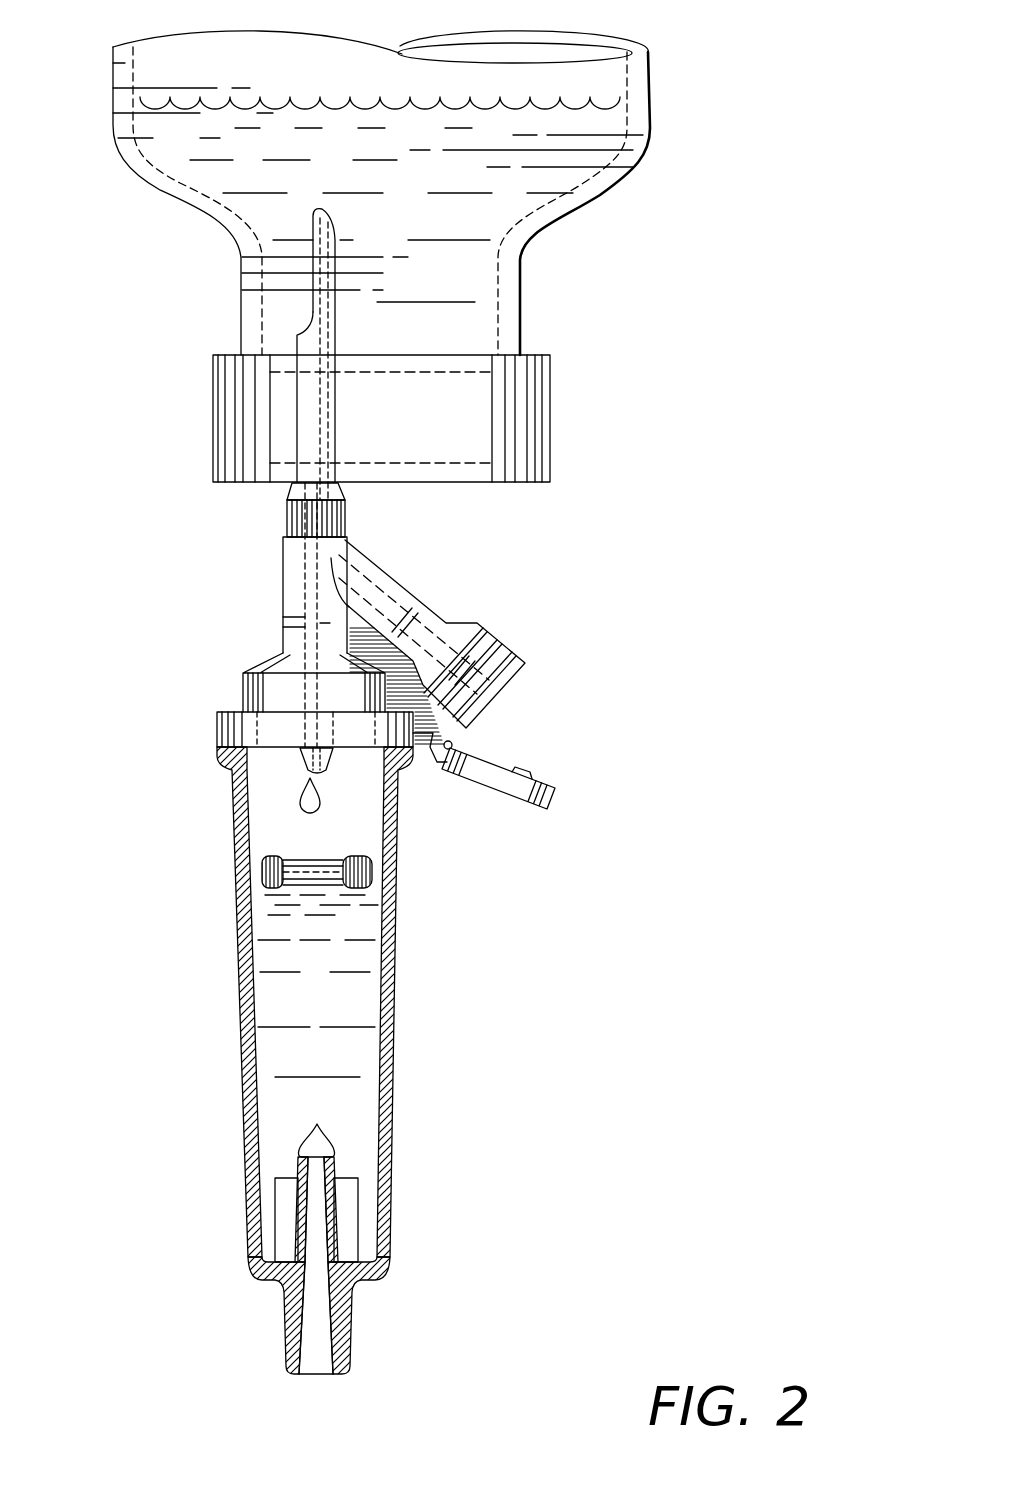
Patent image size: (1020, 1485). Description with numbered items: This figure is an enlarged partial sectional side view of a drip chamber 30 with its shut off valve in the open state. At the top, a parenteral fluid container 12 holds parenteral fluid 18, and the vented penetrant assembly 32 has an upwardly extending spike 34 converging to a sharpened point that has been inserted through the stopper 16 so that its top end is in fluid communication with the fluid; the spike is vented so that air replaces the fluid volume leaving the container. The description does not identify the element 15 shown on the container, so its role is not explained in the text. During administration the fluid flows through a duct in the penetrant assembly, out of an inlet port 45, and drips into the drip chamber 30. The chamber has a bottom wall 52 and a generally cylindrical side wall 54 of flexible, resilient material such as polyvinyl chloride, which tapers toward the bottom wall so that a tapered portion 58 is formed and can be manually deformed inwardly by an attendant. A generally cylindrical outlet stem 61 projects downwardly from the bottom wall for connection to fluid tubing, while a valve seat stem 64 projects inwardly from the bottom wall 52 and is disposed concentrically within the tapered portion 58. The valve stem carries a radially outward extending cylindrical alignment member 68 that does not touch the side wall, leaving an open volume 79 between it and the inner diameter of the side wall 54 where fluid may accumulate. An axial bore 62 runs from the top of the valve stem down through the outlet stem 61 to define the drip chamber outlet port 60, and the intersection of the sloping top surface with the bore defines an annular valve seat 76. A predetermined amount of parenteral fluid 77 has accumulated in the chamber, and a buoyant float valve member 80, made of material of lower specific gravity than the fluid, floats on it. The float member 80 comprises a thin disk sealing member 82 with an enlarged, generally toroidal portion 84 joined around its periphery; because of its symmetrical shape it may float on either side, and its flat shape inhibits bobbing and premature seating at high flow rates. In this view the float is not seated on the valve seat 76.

The parenteral fluid container 12 is at (182, 271).
The reservoir bag 15 is at (607, 193).
The stopper 16 is at (480, 433).
The parenteral fluid 18 is at (603, 110).
The drip chamber 30 is at (403, 810).
The vented penetrant assembly 32 is at (283, 582).
The spike 34 is at (336, 234).
The inlet port 45 is at (300, 760).
The bottom wall 52 is at (265, 1280).
The cylindrical side wall 54 is at (395, 1027).
The tapered portion 58 is at (190, 1068).
The drip chamber outlet port 60 is at (330, 1379).
The outlet stem 61 is at (357, 1303).
The axial bore 62 is at (323, 1378).
The valve seat stem 64 is at (287, 1228).
The alignment member 68 is at (363, 1187).
The annular valve seat 76 is at (316, 1126).
The parenteral fluid 77 is at (283, 1027).
The open volume 79 is at (368, 1243).
The float valve member 80 is at (385, 858).
The sealing member 82 is at (325, 868).
The enlarged portion 84 is at (257, 867).